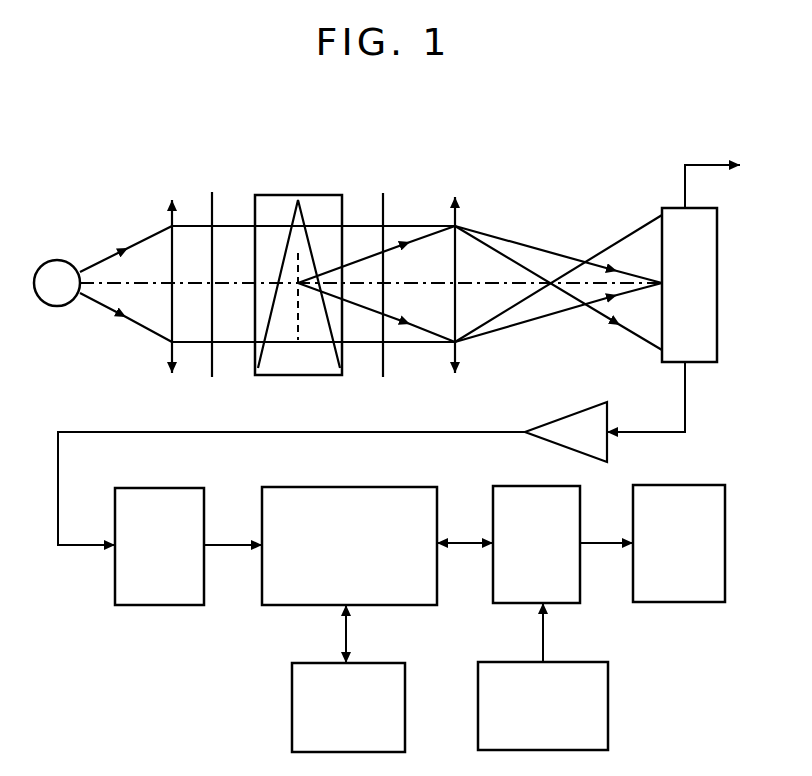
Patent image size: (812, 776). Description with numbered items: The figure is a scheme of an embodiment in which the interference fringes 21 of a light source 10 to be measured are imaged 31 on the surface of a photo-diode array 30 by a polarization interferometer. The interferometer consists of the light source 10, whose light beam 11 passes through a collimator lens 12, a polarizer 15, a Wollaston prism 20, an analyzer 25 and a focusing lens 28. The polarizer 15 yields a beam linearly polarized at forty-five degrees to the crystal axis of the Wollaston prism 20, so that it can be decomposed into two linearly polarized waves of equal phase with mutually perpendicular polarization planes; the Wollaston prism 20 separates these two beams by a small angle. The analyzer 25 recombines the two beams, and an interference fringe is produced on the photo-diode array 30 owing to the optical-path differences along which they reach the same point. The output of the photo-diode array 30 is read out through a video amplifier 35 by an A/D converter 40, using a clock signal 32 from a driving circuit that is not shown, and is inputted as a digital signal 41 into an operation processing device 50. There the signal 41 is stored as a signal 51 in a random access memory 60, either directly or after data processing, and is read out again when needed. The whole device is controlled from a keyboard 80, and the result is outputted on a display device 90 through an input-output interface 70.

The light source 10 is at (52, 262).
The light beam 11 is at (114, 247).
The collimator lens 12 is at (172, 198).
The polarizer 15 is at (212, 192).
The Wollaston prism 20 is at (283, 195).
The interference fringes 21 is at (302, 253).
The analyzer 25 is at (383, 193).
The focusing lens 28 is at (457, 197).
The photo-diode array 30 is at (672, 208).
The imaged interference fringes 31 is at (660, 250).
The clock signal 32 is at (734, 179).
The video amplifier 35 is at (580, 412).
The A/D converter 40 is at (167, 488).
The digital signal 41 is at (232, 546).
The operation processing device 50 is at (333, 487).
The signal 51 is at (350, 638).
The random access memory 60 is at (292, 697).
The input-output interface 70 is at (515, 486).
The keyboard 80 is at (608, 697).
The display device 90 is at (697, 485).